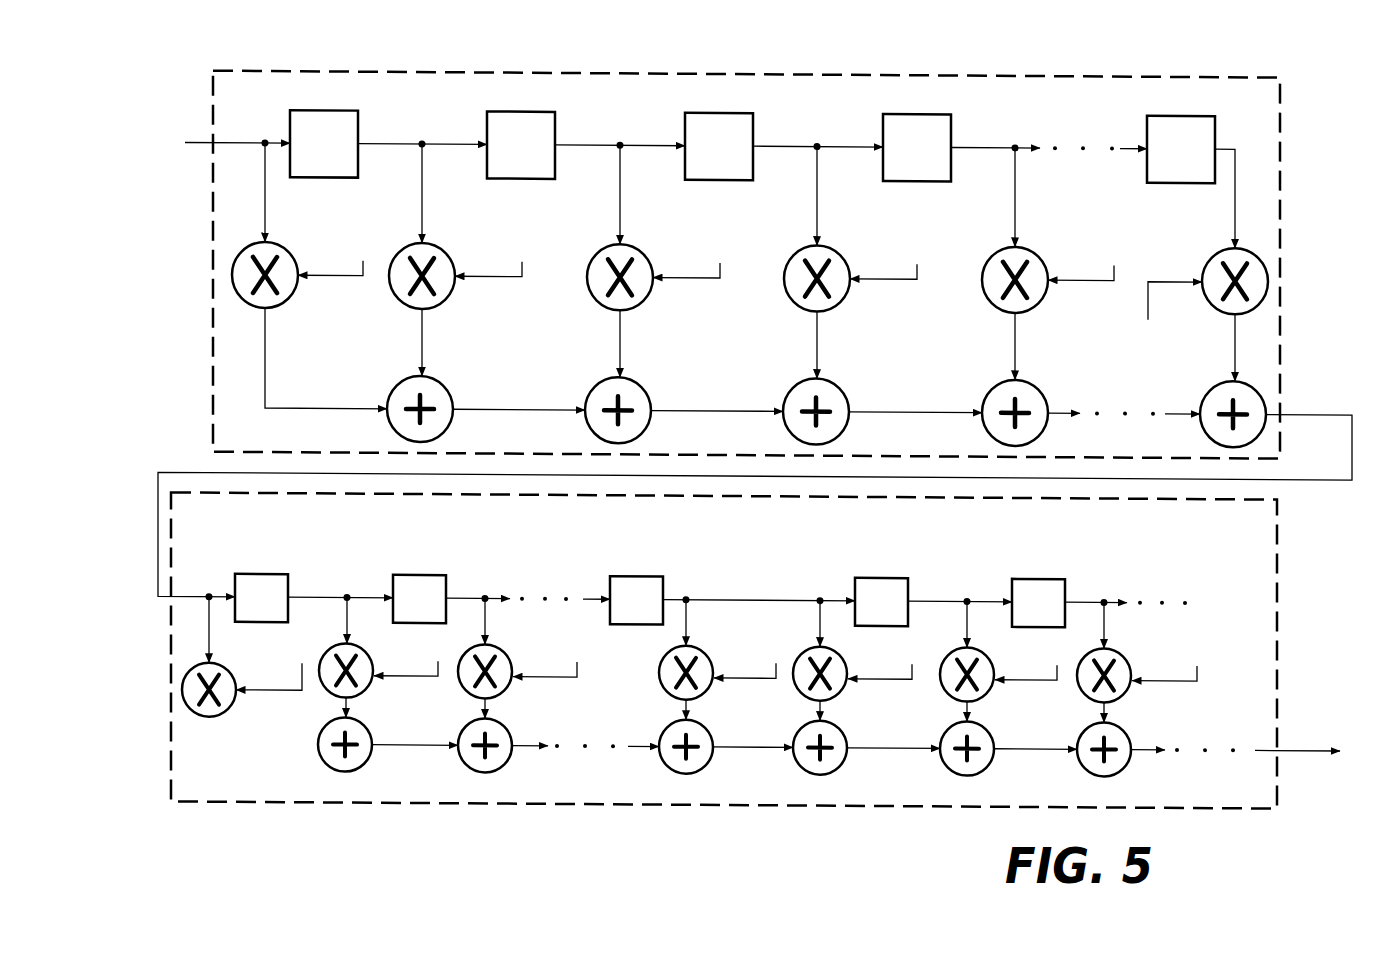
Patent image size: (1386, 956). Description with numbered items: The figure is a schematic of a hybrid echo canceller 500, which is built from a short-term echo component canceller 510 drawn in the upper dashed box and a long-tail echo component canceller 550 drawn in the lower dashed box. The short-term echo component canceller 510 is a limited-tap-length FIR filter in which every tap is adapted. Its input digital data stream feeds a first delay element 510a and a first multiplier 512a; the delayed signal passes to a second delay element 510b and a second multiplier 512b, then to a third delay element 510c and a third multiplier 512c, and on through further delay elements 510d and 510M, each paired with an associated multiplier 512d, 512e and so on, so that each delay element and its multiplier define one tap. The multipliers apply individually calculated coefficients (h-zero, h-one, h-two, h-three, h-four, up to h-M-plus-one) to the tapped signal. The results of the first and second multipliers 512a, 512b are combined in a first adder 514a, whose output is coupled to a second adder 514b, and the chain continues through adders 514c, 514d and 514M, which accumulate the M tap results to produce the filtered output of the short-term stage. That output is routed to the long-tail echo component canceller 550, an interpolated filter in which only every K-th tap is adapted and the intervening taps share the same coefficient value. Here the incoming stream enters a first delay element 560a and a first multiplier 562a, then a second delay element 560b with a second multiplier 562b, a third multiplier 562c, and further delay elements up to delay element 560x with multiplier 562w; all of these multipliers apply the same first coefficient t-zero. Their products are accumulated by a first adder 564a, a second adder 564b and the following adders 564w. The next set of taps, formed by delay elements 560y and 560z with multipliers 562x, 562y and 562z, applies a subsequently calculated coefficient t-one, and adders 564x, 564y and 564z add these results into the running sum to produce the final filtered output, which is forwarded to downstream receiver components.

The echo canceller 500 is at (992, 40).
The short-term echo component canceller 510 is at (284, 103).
The first delay element 510a is at (318, 177).
The second delay element 510b is at (515, 177).
The third delay element 510c is at (713, 177).
The delay element 510d is at (911, 177).
The delay element 510M is at (1150, 117).
The first multiplier 512a is at (284, 250).
The second multiplier 512b is at (441, 250).
The third multiplier 512c is at (639, 250).
The multiplier 512d is at (836, 250).
The multiplier 512e is at (1034, 250).
The first adder 514a is at (445, 384).
The second adder 514b is at (643, 384).
The adder 514c is at (841, 384).
The adder 514d is at (1040, 384).
The adder 514M is at (1262, 388).
The long-tail echo component canceller 550 is at (255, 523).
The first delay element 560a is at (275, 574).
The second delay element 560b is at (432, 574).
The delay element 560x is at (648, 574).
The delay element 560y is at (889, 574).
The delay element 560z is at (1047, 574).
The first multiplier 562a is at (208, 717).
The second multiplier 562b is at (362, 693).
The third multiplier 562c is at (501, 693).
The multiplier 562w is at (702, 693).
The multiplier 562x is at (836, 693).
The multiplier 562y is at (983, 693).
The multiplier 562z is at (1120, 693).
The first adder 564a is at (360, 768).
The second adder 564b is at (500, 768).
The adder 564w is at (701, 768).
The adder 564x is at (835, 768).
The adder 564y is at (982, 768).
The adder 564z is at (1119, 768).